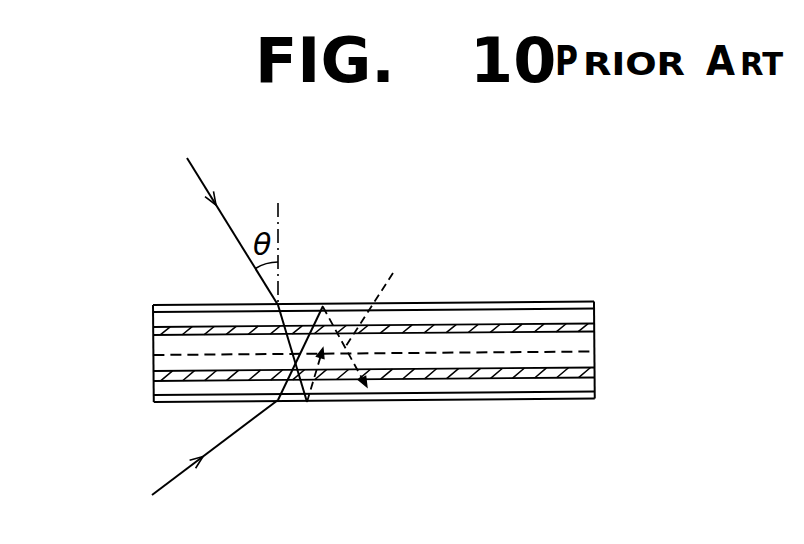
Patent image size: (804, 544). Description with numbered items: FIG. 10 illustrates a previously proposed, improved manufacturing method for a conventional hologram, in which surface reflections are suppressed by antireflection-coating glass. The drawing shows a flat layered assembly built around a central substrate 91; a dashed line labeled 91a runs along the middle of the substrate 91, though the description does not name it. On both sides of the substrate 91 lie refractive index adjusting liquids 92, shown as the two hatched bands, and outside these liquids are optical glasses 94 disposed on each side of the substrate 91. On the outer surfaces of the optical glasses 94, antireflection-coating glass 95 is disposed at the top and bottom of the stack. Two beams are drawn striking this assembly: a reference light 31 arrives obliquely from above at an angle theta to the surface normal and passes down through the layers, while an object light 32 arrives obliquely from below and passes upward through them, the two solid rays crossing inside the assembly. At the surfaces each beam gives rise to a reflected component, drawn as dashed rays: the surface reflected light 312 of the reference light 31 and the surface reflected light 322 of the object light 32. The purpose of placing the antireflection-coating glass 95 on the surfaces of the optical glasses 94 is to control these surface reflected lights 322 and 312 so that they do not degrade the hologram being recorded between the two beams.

The reference light 31 is at (225, 212).
The object light 32 is at (172, 482).
The substrate 91 is at (595, 337).
The center plane of plate 91a is at (153, 354).
The refractive index adjusting liquids 92 is at (153, 327).
The optical glasses 94 is at (507, 316).
The antireflection-coating glass 95 is at (595, 302).
The surface reflected light 312 is at (325, 402).
The surface reflected light 322 is at (374, 312).